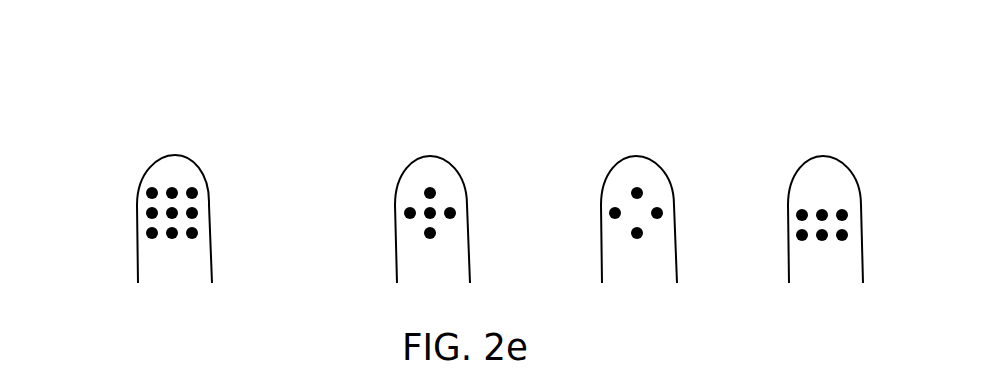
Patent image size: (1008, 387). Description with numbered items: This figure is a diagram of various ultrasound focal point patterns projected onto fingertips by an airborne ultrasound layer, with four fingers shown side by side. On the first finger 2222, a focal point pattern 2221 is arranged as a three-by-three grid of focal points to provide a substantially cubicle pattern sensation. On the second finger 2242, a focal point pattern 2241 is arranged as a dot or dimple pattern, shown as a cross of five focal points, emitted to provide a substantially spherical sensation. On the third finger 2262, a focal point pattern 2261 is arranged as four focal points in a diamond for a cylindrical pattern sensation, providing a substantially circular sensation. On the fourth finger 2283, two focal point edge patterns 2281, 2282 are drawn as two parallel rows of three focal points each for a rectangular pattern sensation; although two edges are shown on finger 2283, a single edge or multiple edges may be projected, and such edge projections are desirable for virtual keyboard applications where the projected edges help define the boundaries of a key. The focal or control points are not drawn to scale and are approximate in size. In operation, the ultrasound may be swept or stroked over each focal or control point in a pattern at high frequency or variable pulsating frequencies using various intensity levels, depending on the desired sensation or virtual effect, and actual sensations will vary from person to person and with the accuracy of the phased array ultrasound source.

The focal point pattern 2221 is at (135, 187).
The finger 2222 is at (188, 177).
The focal point pattern 2241 is at (392, 187).
The finger 2242 is at (407, 168).
The focal point pattern 2261 is at (598, 186).
The finger 2262 is at (638, 157).
The focal point edge pattern 2281 is at (797, 215).
The focal point edge pattern 2282 is at (797, 235).
The finger 2283 is at (810, 160).